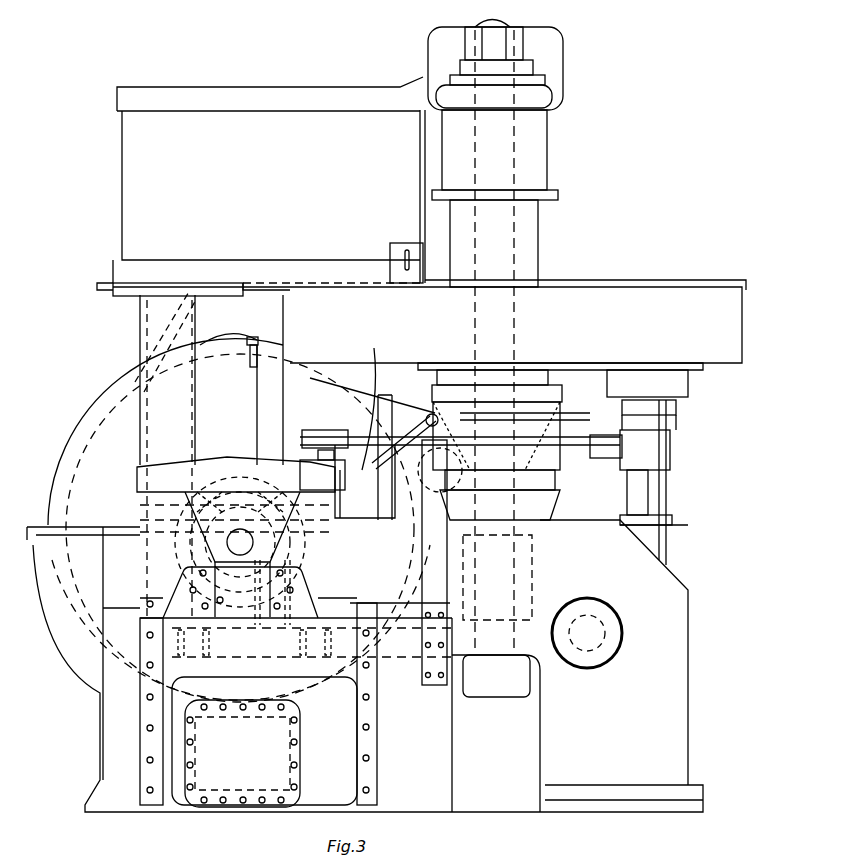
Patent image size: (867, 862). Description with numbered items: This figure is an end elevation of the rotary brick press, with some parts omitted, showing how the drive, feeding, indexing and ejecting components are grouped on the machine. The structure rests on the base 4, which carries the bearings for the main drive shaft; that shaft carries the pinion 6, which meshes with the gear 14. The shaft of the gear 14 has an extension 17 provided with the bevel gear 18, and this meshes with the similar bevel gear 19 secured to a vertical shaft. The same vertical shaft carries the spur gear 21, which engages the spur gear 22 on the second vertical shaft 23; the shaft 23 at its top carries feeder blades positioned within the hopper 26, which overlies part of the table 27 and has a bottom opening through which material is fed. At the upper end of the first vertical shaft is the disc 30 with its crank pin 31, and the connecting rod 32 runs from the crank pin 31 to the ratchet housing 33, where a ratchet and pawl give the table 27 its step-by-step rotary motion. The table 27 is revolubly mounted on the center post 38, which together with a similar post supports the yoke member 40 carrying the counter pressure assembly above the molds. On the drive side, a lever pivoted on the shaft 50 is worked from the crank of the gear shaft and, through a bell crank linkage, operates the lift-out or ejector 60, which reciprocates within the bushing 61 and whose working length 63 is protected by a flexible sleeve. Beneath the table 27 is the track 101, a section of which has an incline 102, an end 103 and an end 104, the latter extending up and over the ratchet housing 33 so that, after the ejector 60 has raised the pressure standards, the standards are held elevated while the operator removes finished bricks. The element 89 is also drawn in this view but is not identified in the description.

The machine frame 4 is at (673, 683).
The pin 6 is at (428, 482).
The flywheel 14 is at (239, 520).
The bearing 17 is at (228, 541).
The shaft 18 is at (298, 538).
The bracket 19 is at (140, 500).
The bolts 21 is at (180, 648).
The cover plate 22 is at (360, 683).
The column 23 is at (290, 414).
The hopper 26 is at (130, 204).
The frame table 27 is at (728, 342).
The plate 30 is at (220, 462).
The bracket 31 is at (325, 430).
The gear 32 is at (540, 442).
The bracket 33 is at (668, 465).
The shaft 38 is at (537, 293).
The nut 40 is at (545, 100).
The opening 50 is at (592, 632).
The rod 60 is at (665, 508).
The collar 61 is at (675, 520).
The post 63 is at (640, 488).
The block 89 is at (676, 388).
The arm 101 is at (442, 381).
The lever 102 is at (386, 466).
The link 103 is at (378, 396).
The hub 104 is at (533, 405).